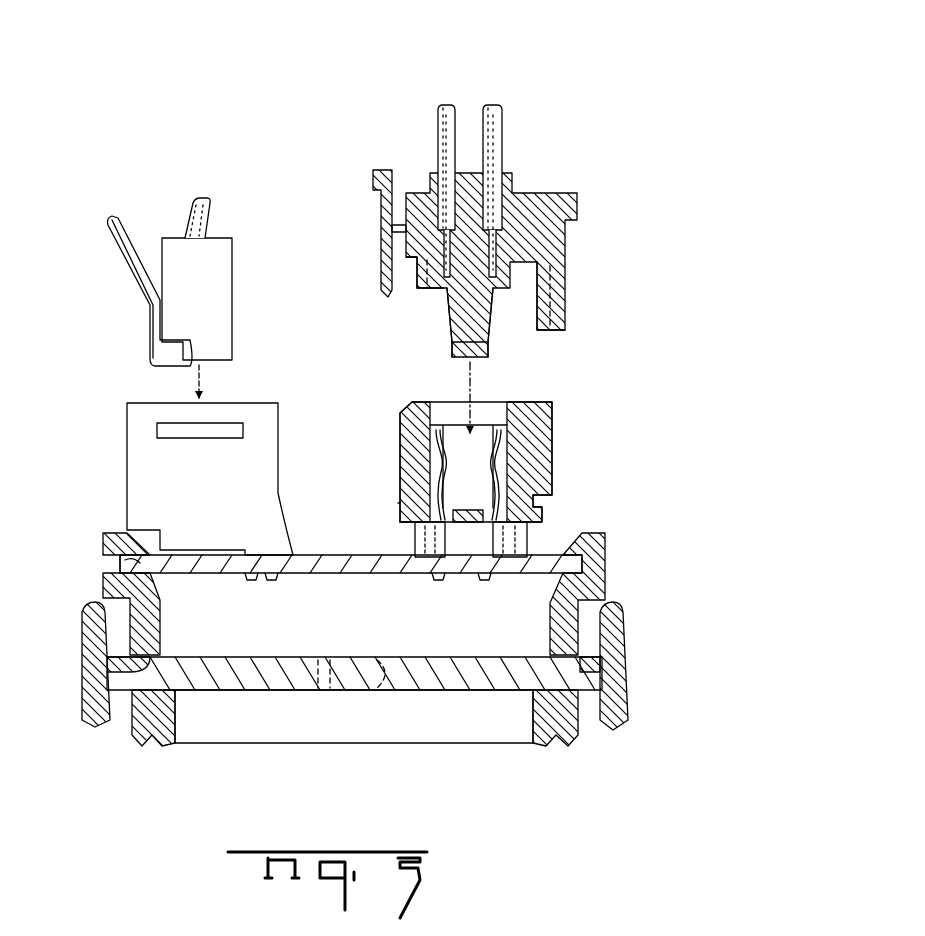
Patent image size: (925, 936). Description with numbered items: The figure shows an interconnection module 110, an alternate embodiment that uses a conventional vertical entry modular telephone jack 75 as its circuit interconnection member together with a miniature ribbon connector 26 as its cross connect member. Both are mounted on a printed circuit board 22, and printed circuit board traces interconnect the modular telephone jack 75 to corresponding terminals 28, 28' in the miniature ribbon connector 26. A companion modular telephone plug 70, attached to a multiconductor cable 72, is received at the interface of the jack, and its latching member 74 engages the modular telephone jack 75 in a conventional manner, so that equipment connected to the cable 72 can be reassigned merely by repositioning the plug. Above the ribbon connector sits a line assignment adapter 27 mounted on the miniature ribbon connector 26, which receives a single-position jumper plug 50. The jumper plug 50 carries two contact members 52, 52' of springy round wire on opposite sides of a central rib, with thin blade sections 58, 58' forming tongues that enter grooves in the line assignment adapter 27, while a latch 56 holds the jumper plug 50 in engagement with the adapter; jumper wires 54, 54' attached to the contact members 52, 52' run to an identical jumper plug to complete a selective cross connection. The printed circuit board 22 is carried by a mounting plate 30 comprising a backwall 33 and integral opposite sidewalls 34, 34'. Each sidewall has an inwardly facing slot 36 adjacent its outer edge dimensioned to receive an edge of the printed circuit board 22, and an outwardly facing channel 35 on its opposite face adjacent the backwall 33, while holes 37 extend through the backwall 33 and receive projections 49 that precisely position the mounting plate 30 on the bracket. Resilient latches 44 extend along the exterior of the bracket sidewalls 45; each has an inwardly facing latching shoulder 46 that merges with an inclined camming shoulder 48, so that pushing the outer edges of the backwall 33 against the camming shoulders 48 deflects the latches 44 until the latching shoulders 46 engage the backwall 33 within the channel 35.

The printed circuit board 22 is at (350, 563).
The miniature ribbon connector 26 is at (402, 515).
The line assignment adapter 27 is at (400, 420).
The terminal 28 is at (544, 475).
The terminal 28' is at (398, 475).
The mounting plate 30 is at (447, 655).
The backwall 33 is at (275, 670).
The sidewall 34 is at (106, 566).
The sidewall 34' is at (610, 566).
The outwardly facing channel 35 is at (130, 622).
The inwardly facing slot 36 is at (140, 553).
The hole 37 is at (333, 693).
The resilient latch 44 is at (90, 697).
The sidewall 45 is at (148, 727).
The latching shoulder 46 is at (123, 672).
The camming shoulder 48 is at (110, 633).
The projection 49 is at (382, 658).
The jumper plug 50 is at (560, 187).
The contact member 52 is at (528, 329).
The contact member 52' is at (417, 329).
The jumper wire 54 is at (517, 153).
The jumper wire 54' is at (421, 153).
The latch 56 is at (381, 222).
The blade section 58 is at (399, 294).
The blade section 58' is at (582, 296).
The modular telephone plug 70 is at (218, 283).
The multiconductor cable 72 is at (203, 210).
The latching member 74 is at (130, 268).
The vertical entry modular telephone jack 75 is at (267, 480).
The interconnection module 110 is at (97, 430).